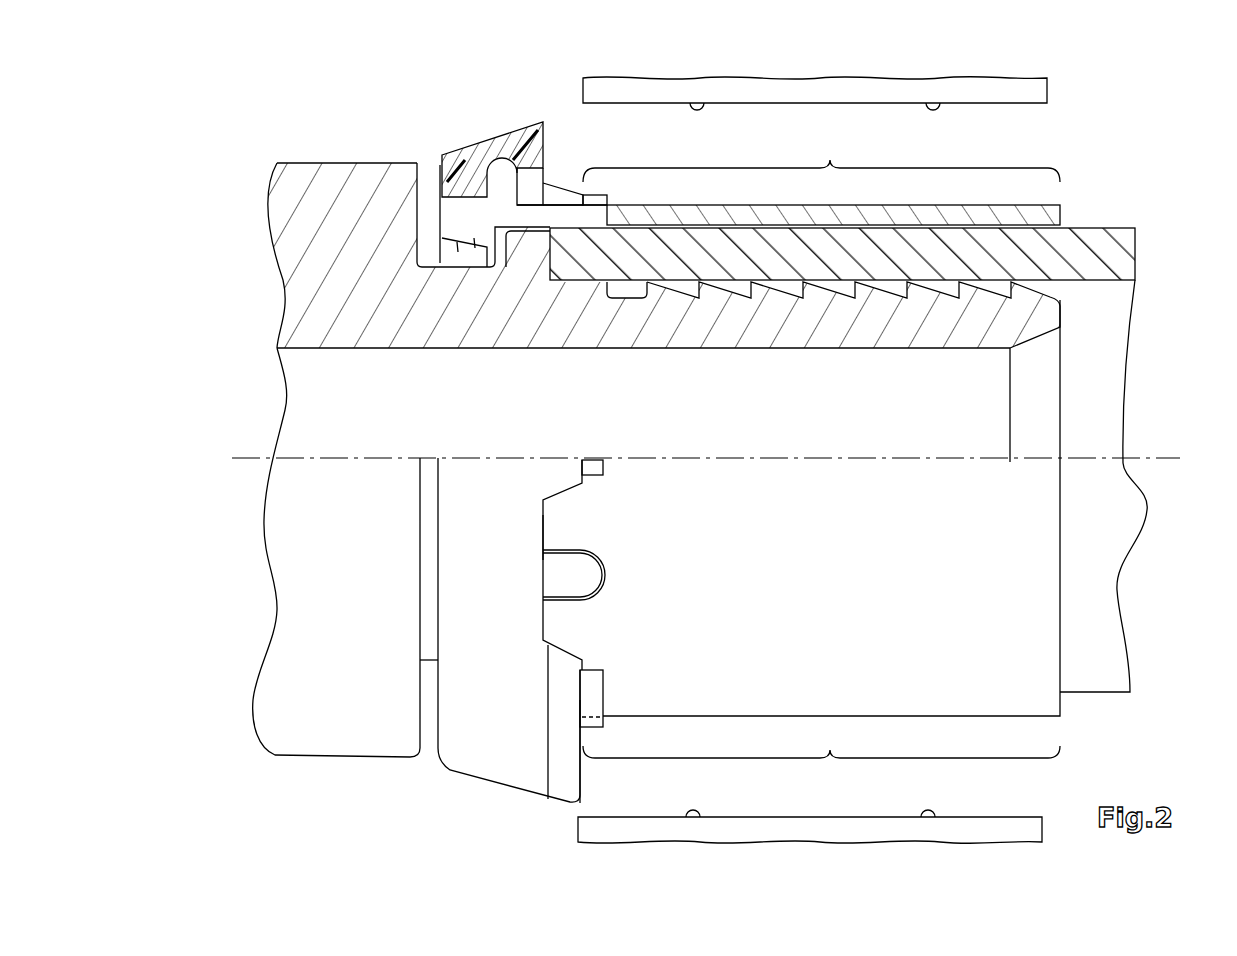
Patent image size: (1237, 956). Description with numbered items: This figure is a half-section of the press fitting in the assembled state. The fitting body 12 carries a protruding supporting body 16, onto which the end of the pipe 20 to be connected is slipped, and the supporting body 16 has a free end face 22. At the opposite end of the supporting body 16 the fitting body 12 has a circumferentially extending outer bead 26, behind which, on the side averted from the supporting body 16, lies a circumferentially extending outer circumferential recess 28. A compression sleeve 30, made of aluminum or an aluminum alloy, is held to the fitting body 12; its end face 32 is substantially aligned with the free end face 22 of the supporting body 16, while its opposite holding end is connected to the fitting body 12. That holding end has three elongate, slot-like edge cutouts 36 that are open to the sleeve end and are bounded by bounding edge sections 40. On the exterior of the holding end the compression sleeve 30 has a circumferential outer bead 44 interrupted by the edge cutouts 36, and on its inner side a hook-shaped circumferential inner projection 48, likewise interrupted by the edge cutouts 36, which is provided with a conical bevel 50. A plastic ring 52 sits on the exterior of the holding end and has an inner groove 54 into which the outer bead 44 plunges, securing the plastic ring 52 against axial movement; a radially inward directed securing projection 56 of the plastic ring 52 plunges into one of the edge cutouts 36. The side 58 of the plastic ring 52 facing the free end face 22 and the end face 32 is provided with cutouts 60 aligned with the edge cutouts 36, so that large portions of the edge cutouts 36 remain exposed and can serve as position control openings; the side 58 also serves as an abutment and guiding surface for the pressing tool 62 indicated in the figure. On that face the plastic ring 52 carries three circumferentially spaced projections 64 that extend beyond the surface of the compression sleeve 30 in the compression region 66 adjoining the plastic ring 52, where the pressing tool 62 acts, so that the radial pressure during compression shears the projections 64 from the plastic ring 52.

The fitting body 12 is at (286, 143).
The supporting body 16 is at (778, 325).
The pipe 20 is at (1070, 262).
The free end face 22 is at (1082, 323).
The outer bead 26 is at (527, 247).
The outer circumferential recess 28 is at (427, 242).
The compression sleeve 30 is at (922, 210).
The end face 32 is at (1082, 192).
The edge cutouts 36 is at (590, 212).
The bounding edge sections 40 is at (580, 568).
The outer bead 44 is at (498, 200).
The inner projection 48 is at (390, 348).
The conical bevel 50 is at (428, 270).
The plastic ring 52 is at (518, 157).
The inner groove 54 is at (443, 153).
The securing projection 56 is at (462, 217).
The side 58 is at (601, 765).
The cutouts 60 is at (573, 540).
The pressing tool 62 is at (742, 88).
The projections 64 is at (593, 200).
The compression region 66 is at (821, 462).